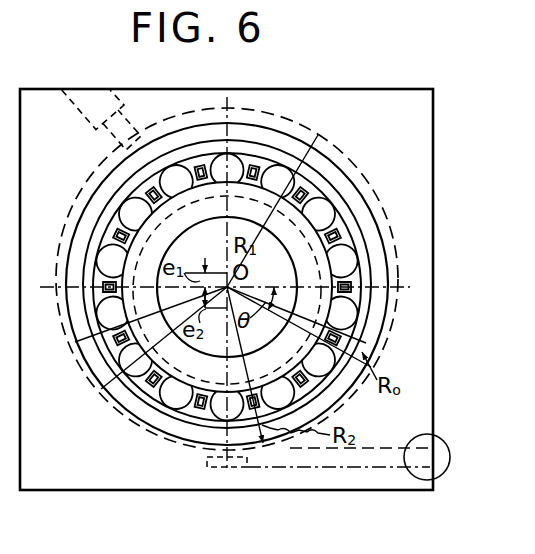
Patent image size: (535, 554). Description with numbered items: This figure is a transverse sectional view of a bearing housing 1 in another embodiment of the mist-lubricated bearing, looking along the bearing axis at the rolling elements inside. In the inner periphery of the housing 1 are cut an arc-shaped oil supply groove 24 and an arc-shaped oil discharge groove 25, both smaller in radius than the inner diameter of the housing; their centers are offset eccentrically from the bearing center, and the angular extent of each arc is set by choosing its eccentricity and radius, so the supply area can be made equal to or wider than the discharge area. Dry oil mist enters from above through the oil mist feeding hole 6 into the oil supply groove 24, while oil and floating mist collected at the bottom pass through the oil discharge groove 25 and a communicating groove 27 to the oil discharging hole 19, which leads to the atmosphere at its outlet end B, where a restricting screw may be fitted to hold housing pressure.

The housing 1 is at (67, 480).
The oil mist feeding hole 6 is at (93, 102).
The oil discharging hole 19 is at (362, 460).
The oil supply groove 24 is at (347, 168).
The oil discharge groove 25 is at (157, 437).
The groove 27 is at (250, 457).
The outlet end of exhaust hole B is at (452, 447).